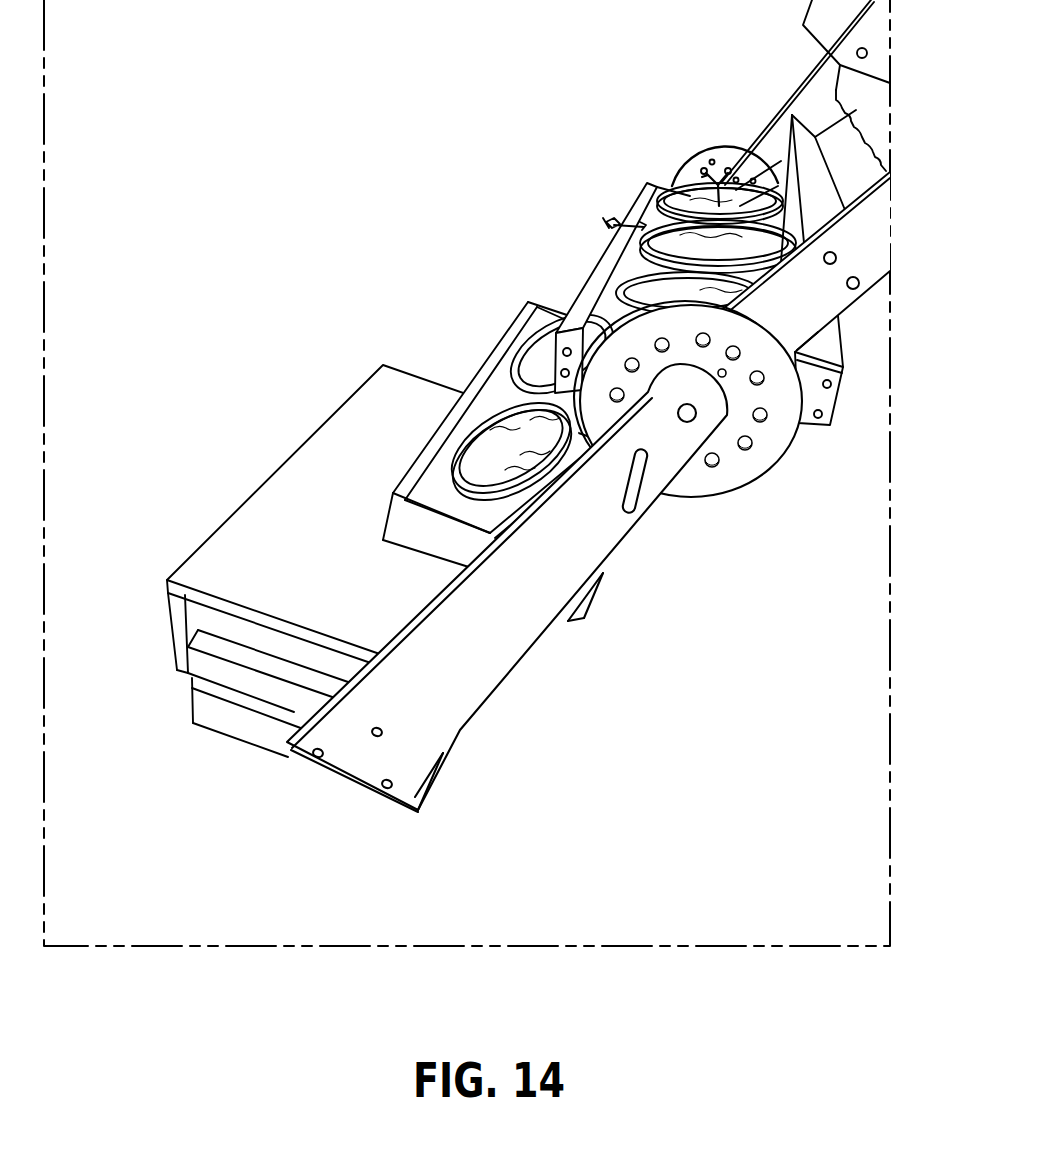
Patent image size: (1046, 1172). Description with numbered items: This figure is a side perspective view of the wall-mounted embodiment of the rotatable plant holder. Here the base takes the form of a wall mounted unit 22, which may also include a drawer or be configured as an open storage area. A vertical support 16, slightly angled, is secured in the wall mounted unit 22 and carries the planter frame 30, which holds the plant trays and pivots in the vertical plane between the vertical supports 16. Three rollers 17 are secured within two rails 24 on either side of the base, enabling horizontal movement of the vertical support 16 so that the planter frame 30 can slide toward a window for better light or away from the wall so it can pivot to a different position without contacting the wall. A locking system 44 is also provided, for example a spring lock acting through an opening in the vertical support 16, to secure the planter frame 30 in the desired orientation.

The vertical support 16 is at (485, 616).
The rollers 17 is at (375, 737).
The wall mounted unit 22 is at (331, 561).
The rails 24 is at (235, 632).
The planter frame 30 is at (864, 257).
The locking system 44 is at (828, 439).